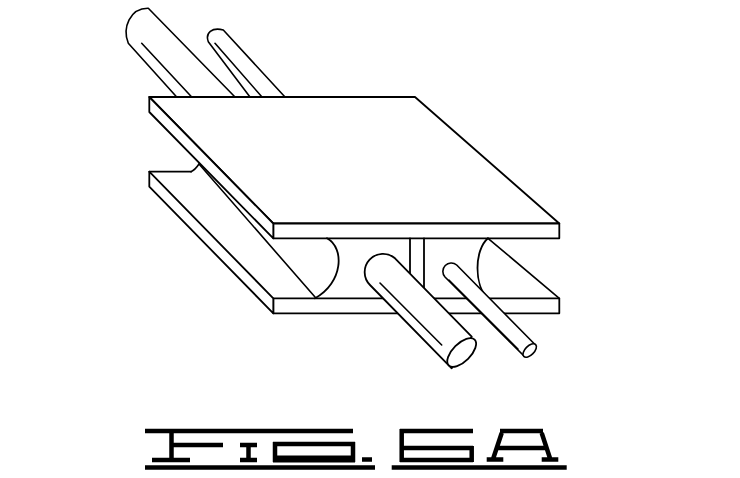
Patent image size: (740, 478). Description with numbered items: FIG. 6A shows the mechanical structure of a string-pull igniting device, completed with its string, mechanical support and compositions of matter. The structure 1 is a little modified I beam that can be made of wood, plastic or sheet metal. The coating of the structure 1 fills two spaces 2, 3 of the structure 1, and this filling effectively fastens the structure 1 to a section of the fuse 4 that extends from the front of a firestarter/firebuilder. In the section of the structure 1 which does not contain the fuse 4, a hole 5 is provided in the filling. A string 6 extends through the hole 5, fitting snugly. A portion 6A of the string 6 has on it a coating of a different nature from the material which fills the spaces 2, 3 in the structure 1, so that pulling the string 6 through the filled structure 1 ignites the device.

The structure 1 is at (459, 133).
The space 2 is at (263, 303).
The space 3 is at (518, 282).
The fuse 4 is at (242, 58).
The hole 5 is at (359, 283).
The string 6 is at (430, 345).
The portion of the string 6A is at (160, 53).